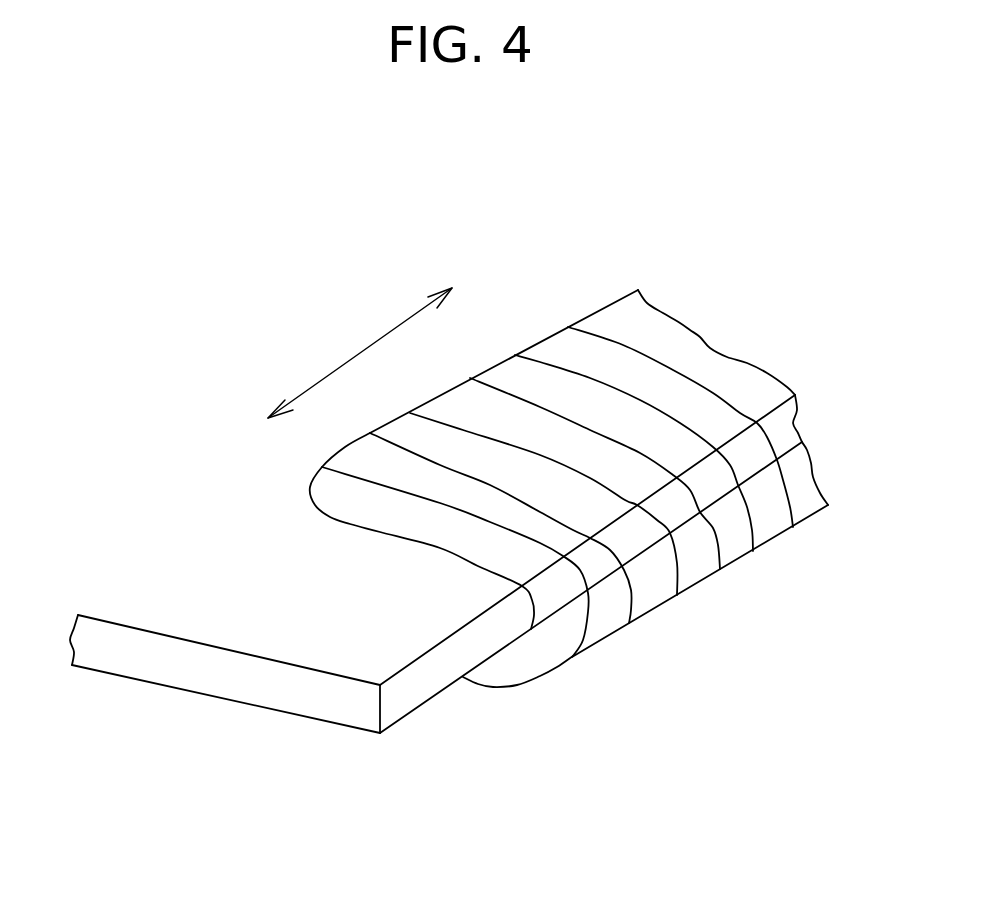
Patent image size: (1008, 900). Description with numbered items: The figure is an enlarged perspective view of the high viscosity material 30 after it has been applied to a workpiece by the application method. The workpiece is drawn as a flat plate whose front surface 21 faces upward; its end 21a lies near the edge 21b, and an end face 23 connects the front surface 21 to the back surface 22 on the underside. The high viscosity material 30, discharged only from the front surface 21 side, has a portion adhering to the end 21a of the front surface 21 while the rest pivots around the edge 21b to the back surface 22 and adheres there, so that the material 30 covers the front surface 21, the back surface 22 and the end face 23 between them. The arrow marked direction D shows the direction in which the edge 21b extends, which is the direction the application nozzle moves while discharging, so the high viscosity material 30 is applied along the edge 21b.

The front surface 21 is at (436, 601).
The end of the front surface 21a is at (380, 638).
The edge of the front surface 21b is at (460, 628).
The back surface 22 is at (305, 718).
The end face 23 is at (422, 689).
The high viscosity material 30 is at (775, 538).
The direction D is at (360, 353).